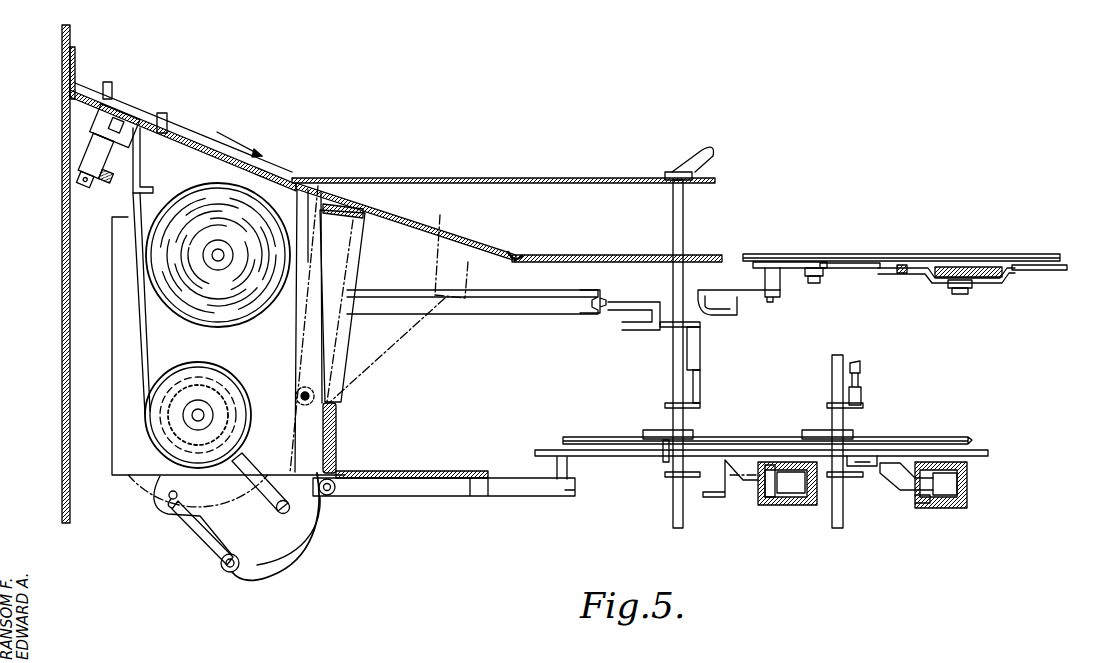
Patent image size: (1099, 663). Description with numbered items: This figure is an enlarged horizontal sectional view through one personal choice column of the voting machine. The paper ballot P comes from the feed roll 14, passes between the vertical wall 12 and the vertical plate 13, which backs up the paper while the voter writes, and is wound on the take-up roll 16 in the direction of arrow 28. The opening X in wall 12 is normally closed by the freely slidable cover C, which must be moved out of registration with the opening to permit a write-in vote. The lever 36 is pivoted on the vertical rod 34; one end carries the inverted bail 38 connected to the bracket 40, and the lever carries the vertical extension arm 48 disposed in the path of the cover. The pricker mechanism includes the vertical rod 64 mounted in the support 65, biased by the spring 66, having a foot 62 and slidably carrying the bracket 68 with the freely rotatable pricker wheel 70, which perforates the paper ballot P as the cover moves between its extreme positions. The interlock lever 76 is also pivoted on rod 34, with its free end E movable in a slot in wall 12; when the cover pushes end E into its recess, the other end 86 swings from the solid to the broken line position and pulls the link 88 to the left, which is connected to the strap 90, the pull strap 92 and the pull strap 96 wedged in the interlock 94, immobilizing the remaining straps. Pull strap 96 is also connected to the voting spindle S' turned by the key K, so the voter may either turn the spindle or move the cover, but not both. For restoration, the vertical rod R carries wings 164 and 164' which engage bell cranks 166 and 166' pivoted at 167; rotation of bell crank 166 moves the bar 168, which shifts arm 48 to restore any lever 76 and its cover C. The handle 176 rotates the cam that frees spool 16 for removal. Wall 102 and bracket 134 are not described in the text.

The vertical wall 12 is at (162, 114).
The vertical plate 13 is at (208, 170).
The feed roll 14 is at (230, 256).
The take-up roll 16 is at (210, 398).
The arrow 28 is at (126, 330).
The vertical rod 34 is at (299, 396).
The lever 36 is at (352, 262).
The inverted bail 38 is at (200, 540).
The bracket 40 is at (160, 497).
The vertical extension arm 48 is at (352, 205).
The foot 62 is at (96, 198).
The vertical rod 64 is at (118, 128).
The support 65 is at (92, 118).
The spring 66 is at (114, 198).
The bracket 68 is at (90, 172).
The pricker wheel 70 is at (92, 152).
The lever 76 is at (303, 315).
The other end of lever 86 is at (318, 505).
The link 88 is at (402, 492).
The strap 90 is at (607, 462).
The pull strap 92 is at (742, 482).
The interlock 94 is at (780, 515).
The pull strap 96 is at (715, 490).
The wall 102 is at (62, 197).
The channel bracket 134 is at (141, 158).
The wing 164 is at (946, 290).
The wing 164' is at (984, 296).
The bell crank 166 is at (901, 280).
The bell crank 166' is at (1047, 286).
The pivot 167 is at (800, 284).
The bar 168 is at (551, 308).
The handle 176 is at (280, 510).
The cover C is at (195, 138).
The opening X is at (239, 138).
The free end E is at (342, 188).
The key K is at (695, 158).
The paper ballot P is at (144, 346).
The vertical rod R is at (950, 266).
The voting spindle S' is at (773, 441).